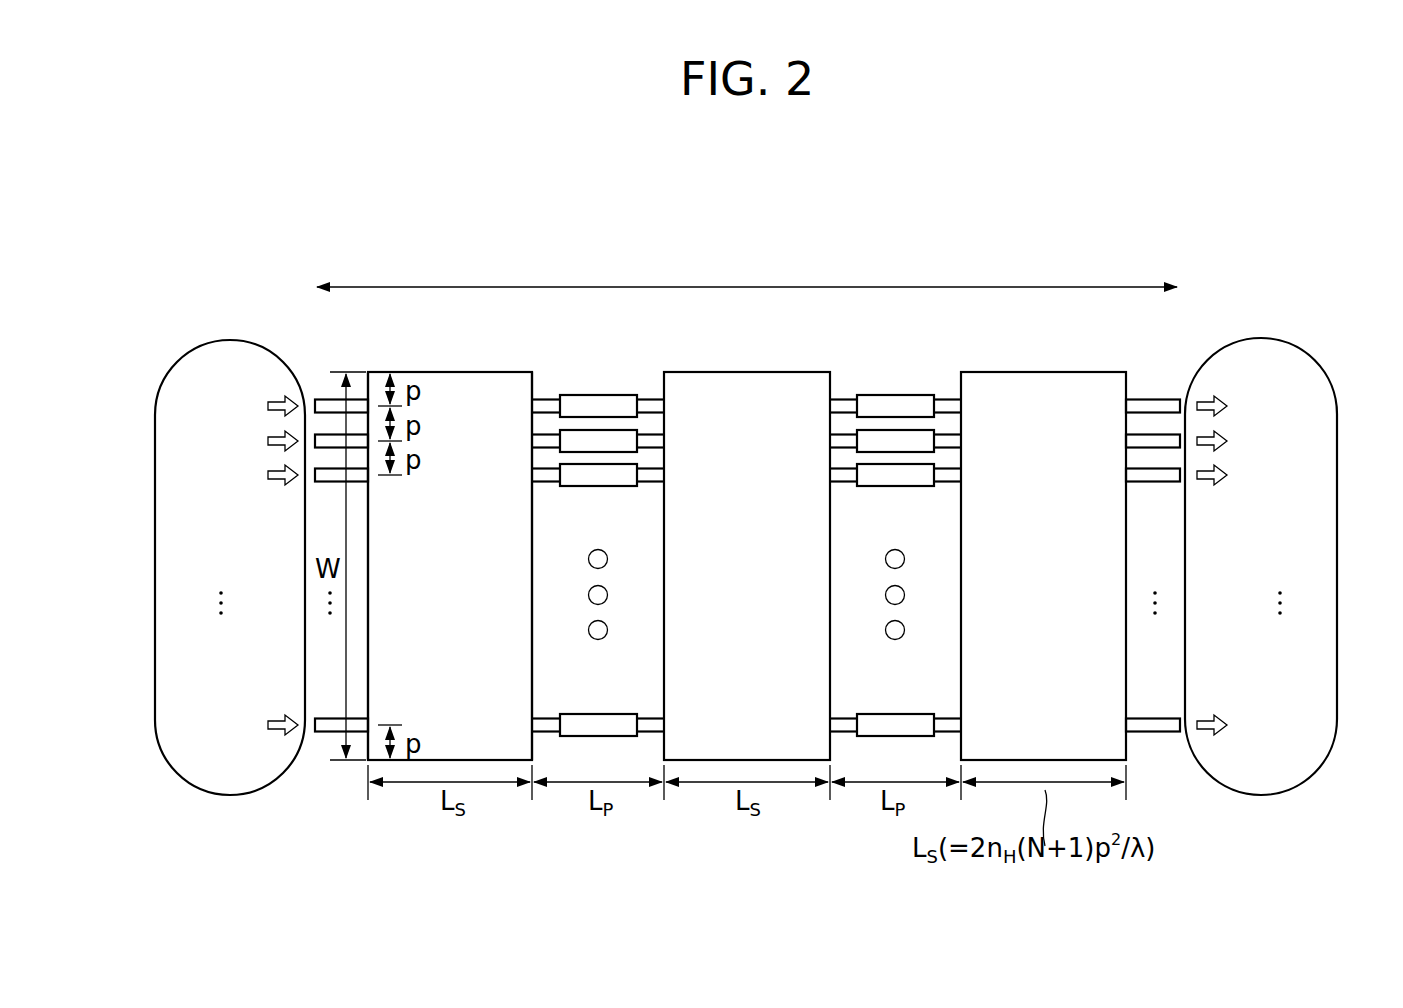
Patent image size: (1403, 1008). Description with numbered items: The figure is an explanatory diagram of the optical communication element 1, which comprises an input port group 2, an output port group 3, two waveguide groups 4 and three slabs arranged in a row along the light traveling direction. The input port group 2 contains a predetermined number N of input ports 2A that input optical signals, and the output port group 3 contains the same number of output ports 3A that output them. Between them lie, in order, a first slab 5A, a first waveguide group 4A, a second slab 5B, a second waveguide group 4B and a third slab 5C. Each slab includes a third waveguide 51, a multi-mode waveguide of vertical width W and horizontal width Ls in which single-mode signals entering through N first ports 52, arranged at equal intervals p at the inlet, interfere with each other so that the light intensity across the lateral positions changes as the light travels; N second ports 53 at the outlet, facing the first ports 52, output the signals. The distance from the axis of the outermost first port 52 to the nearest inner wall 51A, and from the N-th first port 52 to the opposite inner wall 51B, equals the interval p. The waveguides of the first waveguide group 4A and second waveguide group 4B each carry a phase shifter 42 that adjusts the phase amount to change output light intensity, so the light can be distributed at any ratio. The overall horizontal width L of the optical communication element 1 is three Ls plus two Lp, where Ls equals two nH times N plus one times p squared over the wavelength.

The optical communication element 1 is at (1206, 278).
The input port group 2 is at (230, 340).
The input port 2A is at (177, 406).
The output port group 3 is at (1262, 338).
The output port 3A is at (1322, 406).
The waveguide group 4 is at (746, 578).
The first waveguide group 4A is at (582, 352).
The second waveguide group 4B is at (888, 752).
The phase shifter 42 is at (598, 394).
The first slab 5A is at (530, 338).
The second slab 5B is at (760, 368).
The third slab 5C is at (1056, 368).
The third waveguide 51 is at (404, 372).
The inner wall 51A is at (436, 370).
The inner wall 51B is at (536, 628).
The first port 52 is at (371, 398).
The second port 53 is at (532, 408).